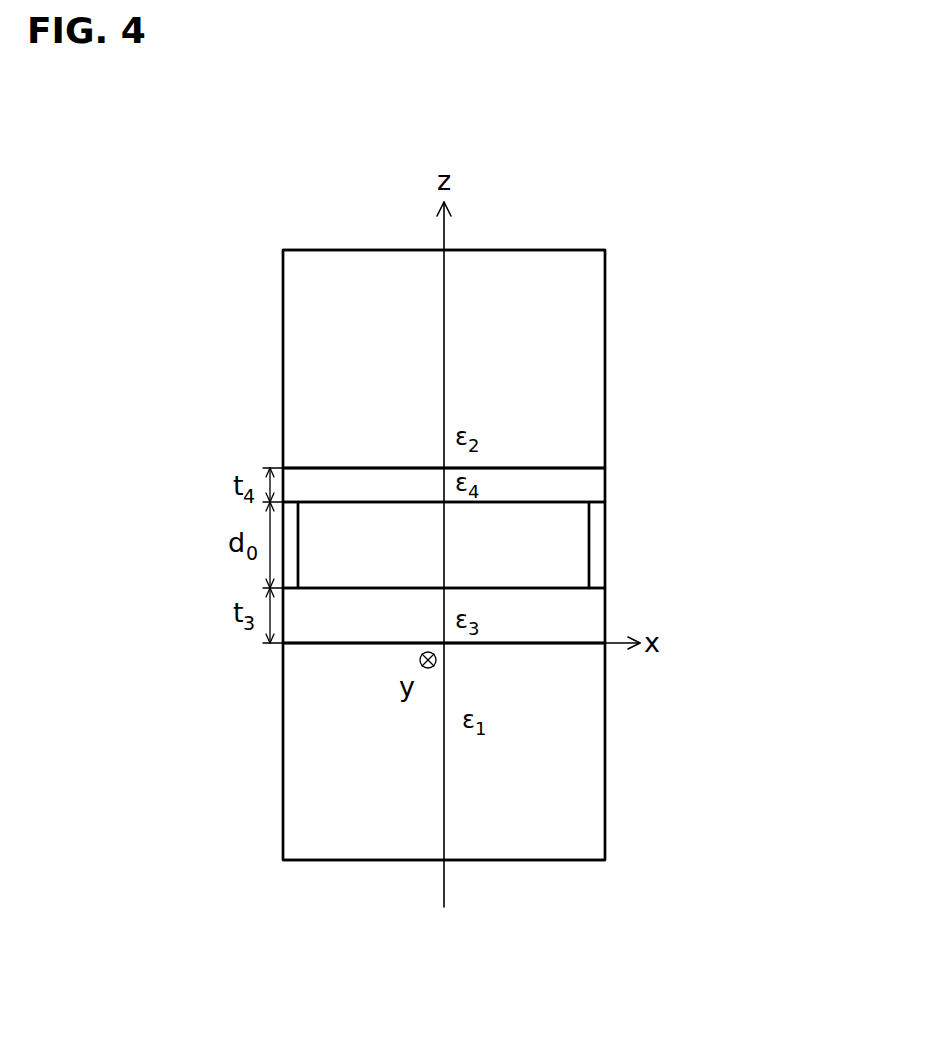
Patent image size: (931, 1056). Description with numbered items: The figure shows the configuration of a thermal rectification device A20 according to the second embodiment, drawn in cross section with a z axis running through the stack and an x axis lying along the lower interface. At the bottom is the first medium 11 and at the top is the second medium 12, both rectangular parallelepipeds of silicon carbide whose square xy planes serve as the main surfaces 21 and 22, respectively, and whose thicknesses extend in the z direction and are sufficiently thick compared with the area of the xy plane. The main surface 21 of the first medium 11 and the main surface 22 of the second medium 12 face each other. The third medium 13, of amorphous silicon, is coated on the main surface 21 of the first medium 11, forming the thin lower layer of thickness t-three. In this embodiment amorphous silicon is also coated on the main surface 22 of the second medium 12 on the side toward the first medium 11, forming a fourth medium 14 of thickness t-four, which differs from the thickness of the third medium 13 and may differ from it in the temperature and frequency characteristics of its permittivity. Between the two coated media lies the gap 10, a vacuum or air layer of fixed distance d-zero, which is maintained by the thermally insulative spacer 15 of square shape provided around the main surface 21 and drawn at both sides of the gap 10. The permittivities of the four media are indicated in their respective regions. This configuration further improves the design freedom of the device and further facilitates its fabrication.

The thermal rectification device A20 is at (775, 177).
The second medium 12 is at (588, 363).
The main surface 22 is at (555, 468).
The fourth medium 14 is at (592, 488).
The gap 10 is at (563, 537).
The thermally insulative spacer 15 is at (598, 563).
The third medium 13 is at (585, 620).
The main surface 21 is at (585, 642).
The first medium 11 is at (590, 723).